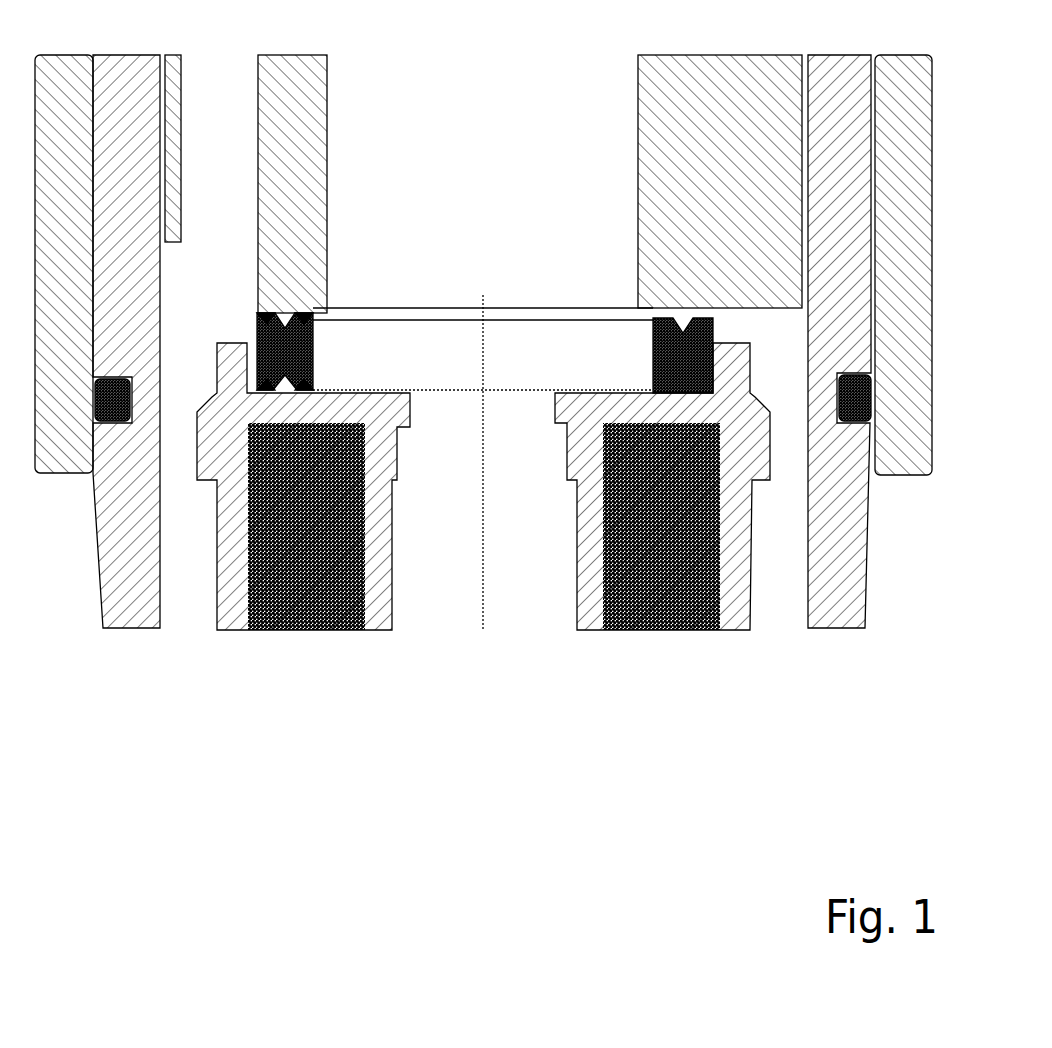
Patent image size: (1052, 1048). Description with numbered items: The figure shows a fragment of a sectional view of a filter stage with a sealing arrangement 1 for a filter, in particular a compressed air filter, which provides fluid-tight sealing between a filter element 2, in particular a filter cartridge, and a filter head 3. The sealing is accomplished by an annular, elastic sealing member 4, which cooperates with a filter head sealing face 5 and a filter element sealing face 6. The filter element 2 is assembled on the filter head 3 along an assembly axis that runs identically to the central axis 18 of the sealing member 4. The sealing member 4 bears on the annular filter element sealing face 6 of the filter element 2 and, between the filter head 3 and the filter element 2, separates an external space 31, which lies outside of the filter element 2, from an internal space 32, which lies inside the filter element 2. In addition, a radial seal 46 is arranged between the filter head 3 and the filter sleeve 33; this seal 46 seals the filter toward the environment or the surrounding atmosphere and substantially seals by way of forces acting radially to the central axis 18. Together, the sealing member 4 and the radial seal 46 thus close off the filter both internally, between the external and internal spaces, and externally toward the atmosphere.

The sealing arrangement 1 is at (463, 176).
The filter element 2 is at (240, 603).
The filter head 3 is at (300, 292).
The sealing member 4 is at (270, 342).
The filter head sealing face 5 is at (273, 331).
The filter element sealing face 6 is at (273, 388).
The central axis 18 is at (483, 295).
The external space 31 is at (190, 560).
The internal space 32 is at (430, 600).
The filter sleeve 33 is at (133, 537).
The radial seal 46 is at (105, 405).